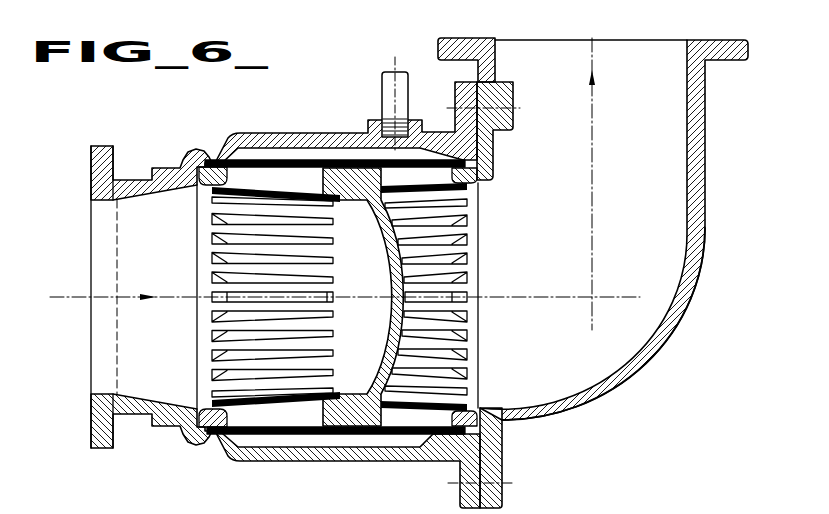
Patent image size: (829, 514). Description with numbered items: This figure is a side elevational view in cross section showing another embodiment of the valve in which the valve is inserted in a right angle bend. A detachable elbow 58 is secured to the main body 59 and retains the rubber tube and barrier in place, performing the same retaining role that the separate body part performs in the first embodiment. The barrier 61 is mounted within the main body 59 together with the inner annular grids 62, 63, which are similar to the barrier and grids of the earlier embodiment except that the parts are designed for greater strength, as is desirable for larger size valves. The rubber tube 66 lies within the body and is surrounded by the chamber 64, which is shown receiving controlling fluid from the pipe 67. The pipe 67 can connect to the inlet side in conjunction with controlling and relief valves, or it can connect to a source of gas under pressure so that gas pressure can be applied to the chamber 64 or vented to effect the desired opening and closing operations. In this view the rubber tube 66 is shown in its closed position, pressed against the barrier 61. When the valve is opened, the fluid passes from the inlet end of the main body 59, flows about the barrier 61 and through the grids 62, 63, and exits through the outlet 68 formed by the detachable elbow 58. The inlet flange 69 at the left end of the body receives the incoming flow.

The detachable elbow 58 is at (663, 320).
The main body 59 is at (268, 133).
The barrier 61 is at (383, 343).
The inner annular grid 62 is at (199, 340).
The inner annular grid 63 is at (473, 340).
The chamber 64 is at (298, 440).
The rubber tube 66 is at (293, 160).
The pipe 67 is at (382, 93).
The outlet 68 is at (678, 107).
The inlet flange 69 is at (96, 340).